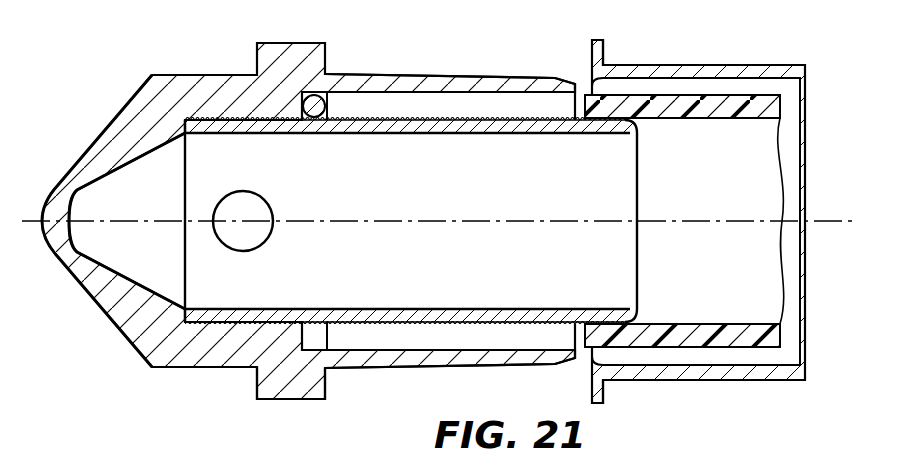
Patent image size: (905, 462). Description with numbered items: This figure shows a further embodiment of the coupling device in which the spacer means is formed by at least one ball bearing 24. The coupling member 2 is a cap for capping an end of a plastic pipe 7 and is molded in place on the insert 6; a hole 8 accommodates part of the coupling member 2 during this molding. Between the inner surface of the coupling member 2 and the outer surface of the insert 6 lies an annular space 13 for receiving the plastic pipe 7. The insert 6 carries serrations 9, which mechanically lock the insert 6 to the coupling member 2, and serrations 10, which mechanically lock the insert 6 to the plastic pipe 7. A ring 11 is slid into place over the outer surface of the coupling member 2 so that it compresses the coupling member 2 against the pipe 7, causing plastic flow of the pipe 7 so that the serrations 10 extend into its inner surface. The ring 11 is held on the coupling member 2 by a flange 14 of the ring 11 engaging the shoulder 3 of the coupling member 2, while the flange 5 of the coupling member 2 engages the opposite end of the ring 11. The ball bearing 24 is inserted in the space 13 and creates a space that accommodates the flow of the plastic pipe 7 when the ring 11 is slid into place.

The coupling member 2 is at (102, 320).
The shoulder 3 is at (268, 63).
The flange 5 is at (564, 82).
The insert 6 is at (655, 248).
The plastic pipe 7 is at (692, 128).
The hole 8 is at (226, 203).
The serrations 9 is at (200, 322).
The serrations 10 is at (372, 122).
The ring 11 is at (700, 52).
The annular space 13 is at (395, 103).
The flange 14 is at (603, 45).
The ball bearing 24 is at (307, 122).